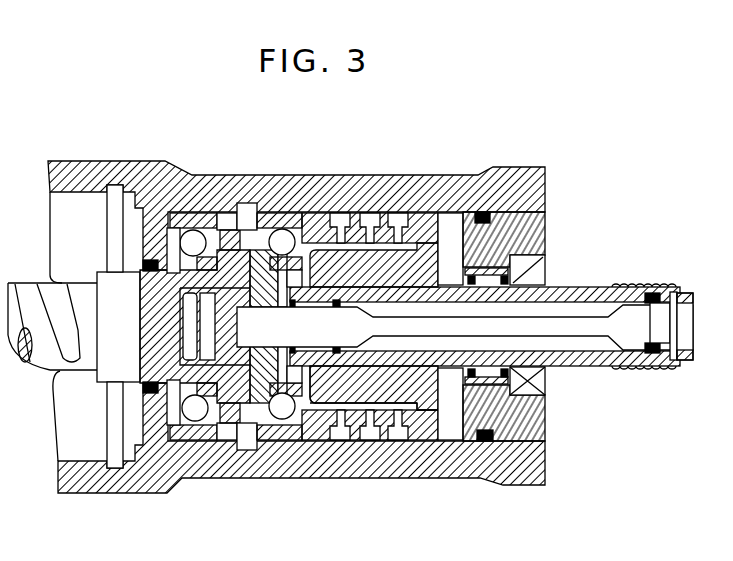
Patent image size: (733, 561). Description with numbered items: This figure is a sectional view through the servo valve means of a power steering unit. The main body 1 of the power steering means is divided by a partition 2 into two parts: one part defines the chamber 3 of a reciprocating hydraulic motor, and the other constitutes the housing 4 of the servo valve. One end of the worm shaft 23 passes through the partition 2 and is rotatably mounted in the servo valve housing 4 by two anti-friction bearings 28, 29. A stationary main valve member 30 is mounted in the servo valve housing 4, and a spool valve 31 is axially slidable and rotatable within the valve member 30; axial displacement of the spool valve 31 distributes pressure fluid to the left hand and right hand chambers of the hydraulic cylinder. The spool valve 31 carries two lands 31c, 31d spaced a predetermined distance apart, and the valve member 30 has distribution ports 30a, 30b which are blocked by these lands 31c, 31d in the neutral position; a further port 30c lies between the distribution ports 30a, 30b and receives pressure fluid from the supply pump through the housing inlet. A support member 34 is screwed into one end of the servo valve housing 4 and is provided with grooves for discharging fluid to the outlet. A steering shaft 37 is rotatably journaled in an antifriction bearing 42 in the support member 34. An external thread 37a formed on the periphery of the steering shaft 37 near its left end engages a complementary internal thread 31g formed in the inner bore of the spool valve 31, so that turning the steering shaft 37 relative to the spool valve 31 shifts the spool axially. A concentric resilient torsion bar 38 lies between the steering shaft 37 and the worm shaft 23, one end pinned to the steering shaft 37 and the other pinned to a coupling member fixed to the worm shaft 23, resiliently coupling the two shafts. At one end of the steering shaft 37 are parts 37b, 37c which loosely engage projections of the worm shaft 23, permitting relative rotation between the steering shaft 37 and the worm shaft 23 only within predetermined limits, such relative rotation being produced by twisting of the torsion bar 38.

The main body 1 is at (87, 172).
The partition 2 is at (157, 430).
The chamber 3 is at (80, 462).
The servo valve housing 4 is at (483, 484).
The worm shaft 23 is at (87, 287).
The anti-friction bearing 28 is at (192, 210).
The anti-friction bearing 29 is at (273, 440).
The main valve member 30 is at (317, 222).
The distribution port 30a is at (337, 222).
The distribution port 30b is at (403, 222).
The port 30c is at (372, 222).
The spool valve 31 is at (447, 240).
The land 31c is at (340, 442).
The land 31d is at (417, 430).
The internal thread 31g is at (373, 405).
The support member 34 is at (537, 223).
The steering shaft 37 is at (557, 366).
The external thread 37a is at (455, 213).
The part 37b is at (280, 420).
The part 37c is at (288, 267).
The torsion bar 38 is at (583, 323).
The antifriction bearing 42 is at (557, 262).